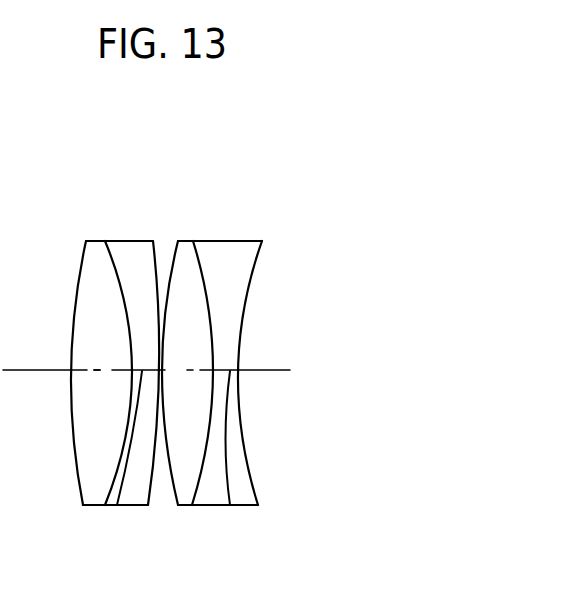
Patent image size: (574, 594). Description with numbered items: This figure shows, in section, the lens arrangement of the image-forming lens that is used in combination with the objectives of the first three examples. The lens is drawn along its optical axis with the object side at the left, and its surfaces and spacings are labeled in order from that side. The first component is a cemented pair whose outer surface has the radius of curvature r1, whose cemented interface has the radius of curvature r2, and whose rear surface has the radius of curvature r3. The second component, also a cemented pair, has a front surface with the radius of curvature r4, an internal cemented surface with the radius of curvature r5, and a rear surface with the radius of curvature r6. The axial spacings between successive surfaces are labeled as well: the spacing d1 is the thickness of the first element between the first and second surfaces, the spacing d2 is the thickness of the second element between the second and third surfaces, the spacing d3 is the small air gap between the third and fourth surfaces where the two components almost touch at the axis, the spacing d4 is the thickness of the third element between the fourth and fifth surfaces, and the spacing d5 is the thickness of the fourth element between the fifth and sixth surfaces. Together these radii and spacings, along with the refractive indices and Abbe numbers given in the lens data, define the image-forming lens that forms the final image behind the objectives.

The radius of curvature of first lens surface r1 is at (60, 188).
The radius of curvature of second lens surface r2 is at (132, 183).
The radius of curvature of third lens surface r3 is at (171, 183).
The radius of curvature of fourth lens surface r4 is at (211, 191).
The radius of curvature of fifth lens surface r5 is at (252, 191).
The radius of curvature of sixth lens surface r6 is at (256, 275).
The first lens surface spacing d1 is at (108, 376).
The second lens surface spacing d2 is at (117, 505).
The third lens surface spacing d3 is at (158, 505).
The fourth lens surface spacing d4 is at (194, 378).
The fifth lens surface spacing d5 is at (230, 505).